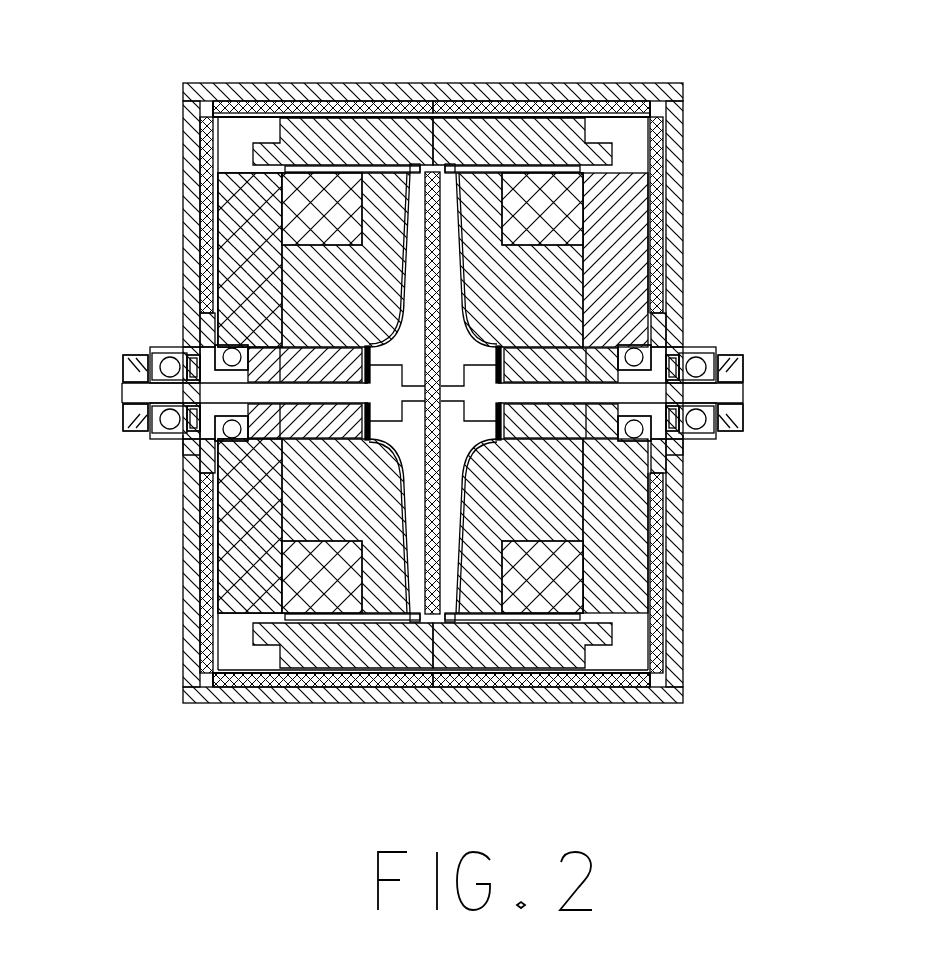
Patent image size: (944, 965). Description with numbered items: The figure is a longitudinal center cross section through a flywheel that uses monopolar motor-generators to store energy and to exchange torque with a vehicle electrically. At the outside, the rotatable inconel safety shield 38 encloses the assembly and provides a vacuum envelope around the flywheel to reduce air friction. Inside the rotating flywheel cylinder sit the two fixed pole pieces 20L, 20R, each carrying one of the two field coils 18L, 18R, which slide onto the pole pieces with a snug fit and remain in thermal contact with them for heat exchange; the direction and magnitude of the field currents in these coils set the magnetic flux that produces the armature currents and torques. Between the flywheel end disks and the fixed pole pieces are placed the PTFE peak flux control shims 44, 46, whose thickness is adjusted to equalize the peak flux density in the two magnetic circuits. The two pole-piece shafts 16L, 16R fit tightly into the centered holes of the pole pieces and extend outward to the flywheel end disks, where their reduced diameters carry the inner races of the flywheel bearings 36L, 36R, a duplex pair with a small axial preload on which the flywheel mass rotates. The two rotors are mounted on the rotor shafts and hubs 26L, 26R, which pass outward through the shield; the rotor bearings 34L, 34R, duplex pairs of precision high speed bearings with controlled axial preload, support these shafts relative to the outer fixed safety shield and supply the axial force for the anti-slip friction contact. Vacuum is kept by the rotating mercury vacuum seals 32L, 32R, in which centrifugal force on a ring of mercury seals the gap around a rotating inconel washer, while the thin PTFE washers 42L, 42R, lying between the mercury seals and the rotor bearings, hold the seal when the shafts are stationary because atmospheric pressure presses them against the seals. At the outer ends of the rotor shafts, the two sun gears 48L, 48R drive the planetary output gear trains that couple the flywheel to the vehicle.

The pole-piece shaft 16L is at (261, 394).
The pole-piece shaft 16R is at (631, 394).
The field coil 18L is at (263, 421).
The field coil 18R is at (644, 410).
The fixed pole piece 20L is at (258, 323).
The fixed pole piece 20R is at (549, 314).
The rotor shaft and hub 26L is at (117, 393).
The rotor shaft and hub 26R is at (764, 393).
The rotating mercury vacuum seal 32L is at (140, 430).
The rotating mercury vacuum seal 32R is at (725, 430).
The rotor bearing 34L is at (158, 359).
The rotor bearing 34R is at (709, 358).
The flywheel bearing 36L is at (164, 332).
The flywheel bearing 36R is at (703, 331).
The rotatable inconel safety shield 38 is at (433, 362).
The PTFE washer 42L is at (140, 520).
The PTFE washer 42R is at (738, 511).
The PTFE peak flux control shim 44 is at (273, 386).
The PTFE peak flux control shim 46 is at (599, 296).
The sun gear 48L is at (87, 402).
The sun gear 48R is at (784, 402).